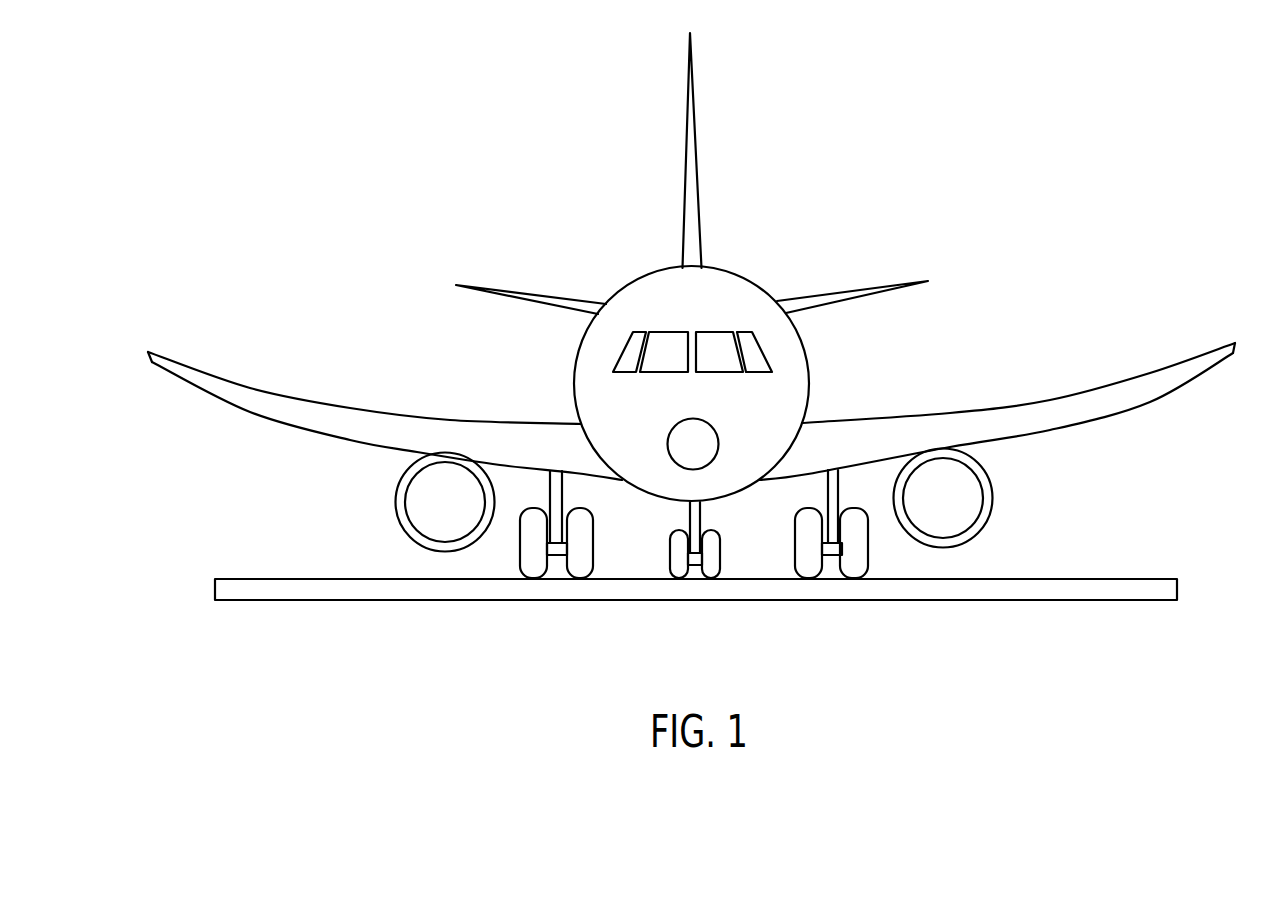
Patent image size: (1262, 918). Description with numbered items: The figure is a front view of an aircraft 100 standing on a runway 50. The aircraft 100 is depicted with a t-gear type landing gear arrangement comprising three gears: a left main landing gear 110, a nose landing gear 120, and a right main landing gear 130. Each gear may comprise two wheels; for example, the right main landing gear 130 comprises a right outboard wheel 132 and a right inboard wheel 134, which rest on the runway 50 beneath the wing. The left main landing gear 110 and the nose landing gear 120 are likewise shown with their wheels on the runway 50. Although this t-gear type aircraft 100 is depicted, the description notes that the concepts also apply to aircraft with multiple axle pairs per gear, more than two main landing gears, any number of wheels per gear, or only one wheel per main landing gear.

The runway 50 is at (1047, 579).
The aircraft 100 is at (691, 349).
The left main landing gear 110 is at (870, 567).
The nose landing gear 120 is at (720, 570).
The right main landing gear 130 is at (554, 568).
The right outboard wheel 132 is at (533, 580).
The right inboard wheel 134 is at (582, 580).